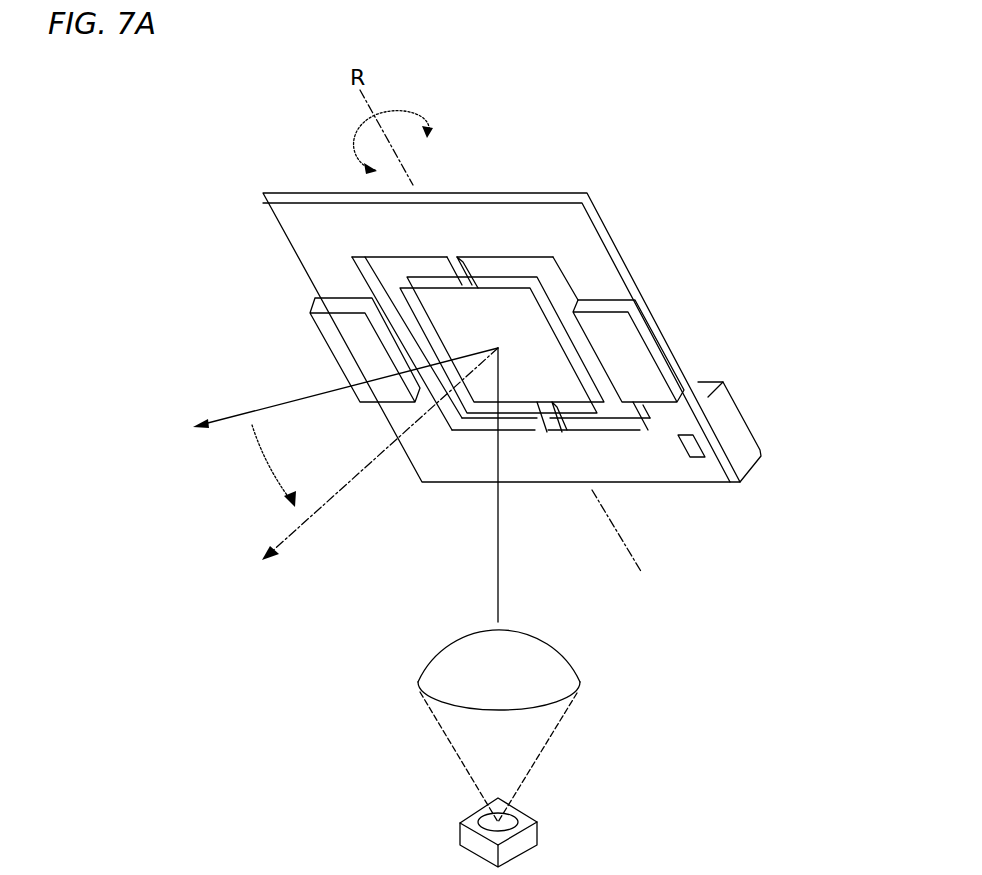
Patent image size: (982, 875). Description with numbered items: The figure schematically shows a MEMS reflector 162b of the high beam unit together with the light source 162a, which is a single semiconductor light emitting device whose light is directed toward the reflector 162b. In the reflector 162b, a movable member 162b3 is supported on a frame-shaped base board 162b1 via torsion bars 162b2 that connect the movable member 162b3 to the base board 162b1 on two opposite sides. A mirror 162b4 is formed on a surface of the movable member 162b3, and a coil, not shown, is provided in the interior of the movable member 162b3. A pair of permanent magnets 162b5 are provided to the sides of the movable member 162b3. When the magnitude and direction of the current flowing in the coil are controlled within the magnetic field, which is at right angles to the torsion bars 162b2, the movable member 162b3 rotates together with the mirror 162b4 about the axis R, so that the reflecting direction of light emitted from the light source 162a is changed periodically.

The reflector 162b is at (648, 178).
The frame-shaped base board 162b1 is at (573, 230).
The torsion bars 162b2 is at (441, 255).
The movable member 162b3 is at (527, 266).
The mirror 162b4 is at (620, 448).
The permanent magnets 162b5 is at (353, 346).
The light source 162a is at (458, 833).